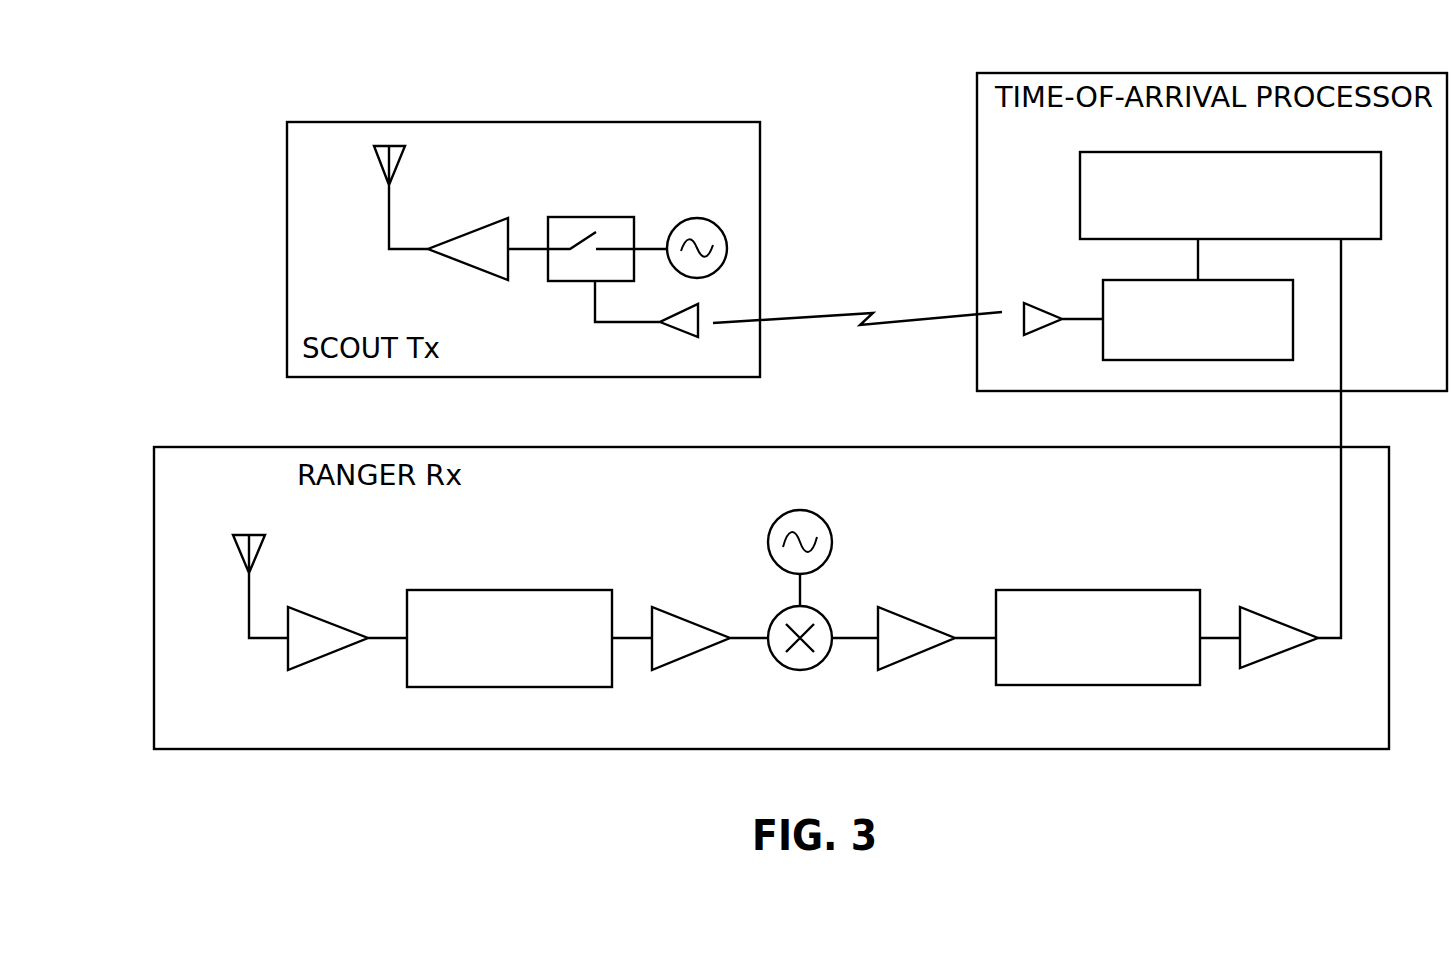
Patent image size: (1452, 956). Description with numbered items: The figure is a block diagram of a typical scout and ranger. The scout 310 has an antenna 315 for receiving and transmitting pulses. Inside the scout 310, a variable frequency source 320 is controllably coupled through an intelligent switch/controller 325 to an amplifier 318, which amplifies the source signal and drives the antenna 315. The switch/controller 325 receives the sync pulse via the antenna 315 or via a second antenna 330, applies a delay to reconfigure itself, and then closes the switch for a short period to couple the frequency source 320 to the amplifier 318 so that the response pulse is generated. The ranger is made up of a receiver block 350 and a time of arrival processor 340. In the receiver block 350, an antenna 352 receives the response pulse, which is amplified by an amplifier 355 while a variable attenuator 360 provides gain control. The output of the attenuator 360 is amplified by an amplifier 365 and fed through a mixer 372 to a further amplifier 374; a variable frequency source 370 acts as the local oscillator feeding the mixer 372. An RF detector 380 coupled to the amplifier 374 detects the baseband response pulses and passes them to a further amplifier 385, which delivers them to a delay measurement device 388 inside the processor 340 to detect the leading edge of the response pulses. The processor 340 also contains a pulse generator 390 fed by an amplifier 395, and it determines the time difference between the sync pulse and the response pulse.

The scout 310 is at (540, 122).
The antenna 315 is at (379, 166).
The amplifier 318 is at (471, 229).
The variable frequency source 320 is at (697, 216).
The intelligent switch/controller 325 is at (588, 216).
The second antenna 330 is at (681, 333).
The time of arrival processor 340 is at (1205, 73).
The ranger receiver block 350 is at (210, 448).
The antenna 352 is at (241, 551).
The amplifier 355 is at (315, 616).
The variable attenuator 360 is at (528, 591).
The amplifier 365 is at (688, 616).
The variable frequency source 370 is at (833, 543).
The mixer 372 is at (801, 672).
The amplifier 374 is at (910, 616).
The RF detector 380 is at (1097, 589).
The amplifier 385 is at (1273, 613).
The delay measurement device 388 is at (1080, 185).
The pulse generator 390 is at (1103, 291).
The amplifier 395 is at (1046, 329).